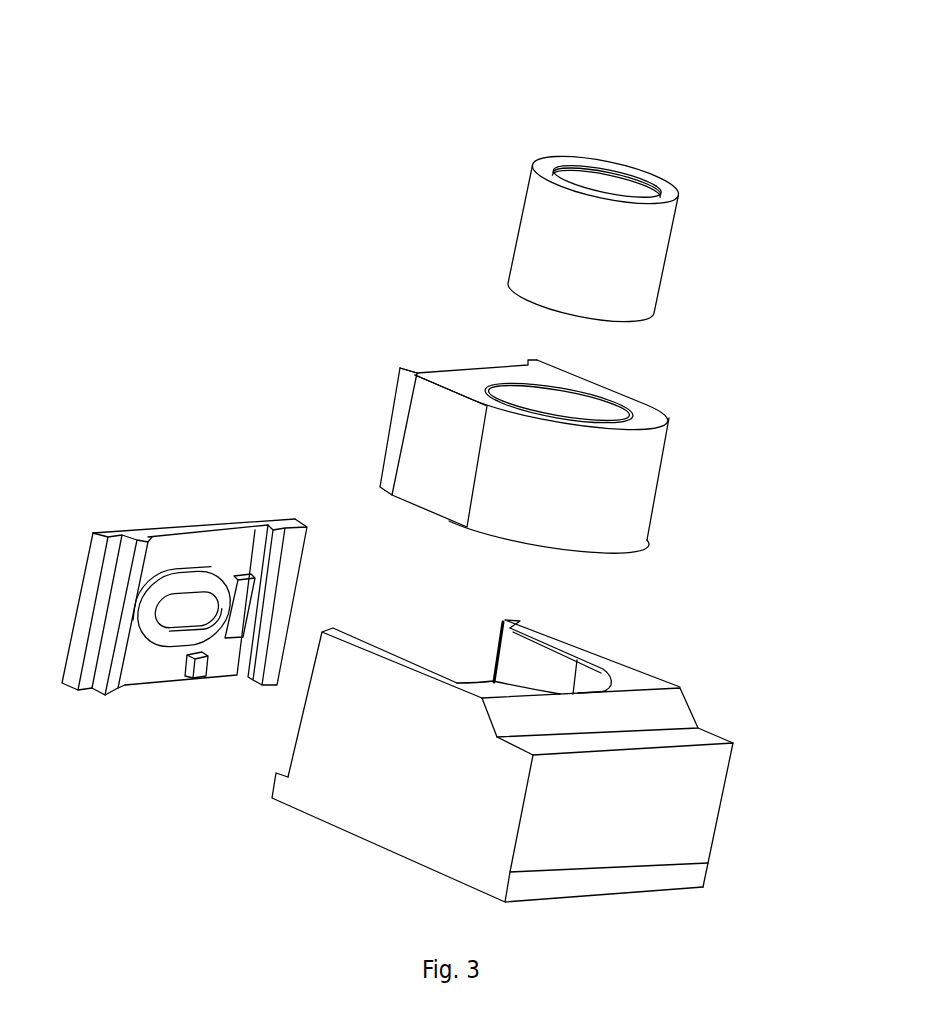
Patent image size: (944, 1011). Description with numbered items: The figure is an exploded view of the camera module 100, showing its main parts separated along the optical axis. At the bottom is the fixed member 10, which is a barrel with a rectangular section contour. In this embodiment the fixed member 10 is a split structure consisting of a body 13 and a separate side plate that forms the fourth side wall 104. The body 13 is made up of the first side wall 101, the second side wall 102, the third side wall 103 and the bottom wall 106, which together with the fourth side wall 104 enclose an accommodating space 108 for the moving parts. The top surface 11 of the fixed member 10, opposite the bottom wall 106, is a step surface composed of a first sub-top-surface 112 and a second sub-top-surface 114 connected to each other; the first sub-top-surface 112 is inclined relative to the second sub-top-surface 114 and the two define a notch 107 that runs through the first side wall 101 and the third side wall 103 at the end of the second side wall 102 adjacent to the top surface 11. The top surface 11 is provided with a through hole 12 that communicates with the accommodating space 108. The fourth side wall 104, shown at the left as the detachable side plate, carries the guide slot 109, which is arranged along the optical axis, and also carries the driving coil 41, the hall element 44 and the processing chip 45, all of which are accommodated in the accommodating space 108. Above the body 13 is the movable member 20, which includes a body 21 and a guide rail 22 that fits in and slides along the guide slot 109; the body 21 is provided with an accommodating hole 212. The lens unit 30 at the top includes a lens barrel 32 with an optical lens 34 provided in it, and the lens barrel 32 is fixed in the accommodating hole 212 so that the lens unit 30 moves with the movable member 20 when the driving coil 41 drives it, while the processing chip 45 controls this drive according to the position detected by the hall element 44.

The camera module 100 is at (458, 65).
The lens unit 30 is at (736, 152).
The lens barrel 32 is at (625, 232).
The optical lens 34 is at (620, 182).
The movable member 20 is at (752, 380).
The body 21 is at (645, 480).
The guide rail 22 is at (403, 388).
The accommodating hole 212 is at (600, 405).
The body 13 is at (705, 592).
The top surface 11 is at (787, 642).
The first sub-top-surface 112 is at (660, 710).
The second sub-top-surface 114 is at (695, 735).
The first side wall 101 is at (605, 660).
The through hole 12 is at (545, 650).
The accommodating space 108 is at (503, 675).
The third side wall 103 is at (362, 636).
The second side wall 102 is at (700, 830).
The bottom wall 106 is at (405, 840).
The notch 107 is at (528, 742).
The fixed member 10 is at (165, 415).
The fourth side wall 104 is at (175, 530).
The guide slot 109 is at (263, 527).
The driving coil 41 is at (155, 632).
The hall element 44 is at (240, 625).
The processing chip 45 is at (197, 668).